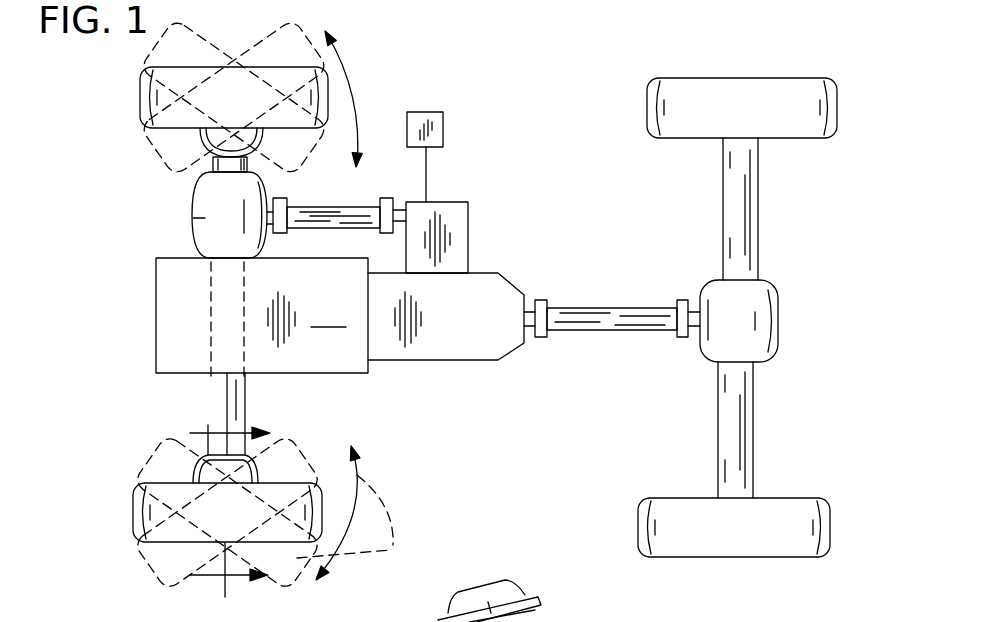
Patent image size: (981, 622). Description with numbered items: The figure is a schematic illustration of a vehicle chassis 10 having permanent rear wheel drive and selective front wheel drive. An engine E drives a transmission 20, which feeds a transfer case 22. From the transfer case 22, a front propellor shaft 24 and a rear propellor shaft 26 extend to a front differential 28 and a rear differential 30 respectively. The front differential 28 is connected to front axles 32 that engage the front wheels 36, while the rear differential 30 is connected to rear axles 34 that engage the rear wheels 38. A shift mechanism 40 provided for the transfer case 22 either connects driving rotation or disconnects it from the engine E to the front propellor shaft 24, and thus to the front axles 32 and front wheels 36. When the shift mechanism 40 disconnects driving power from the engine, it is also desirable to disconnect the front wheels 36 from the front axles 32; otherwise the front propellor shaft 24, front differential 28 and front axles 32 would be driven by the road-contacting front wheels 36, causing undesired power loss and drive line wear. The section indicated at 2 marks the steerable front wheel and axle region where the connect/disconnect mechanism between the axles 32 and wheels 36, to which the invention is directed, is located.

The engine 10 is at (157, 303).
The transmission 20 is at (478, 327).
The transfer case 22 is at (455, 243).
The front propellor shaft 24 is at (365, 212).
The rear propellor shaft 26 is at (600, 318).
The front differential 28 is at (207, 220).
The rear differential 30 is at (760, 325).
The front axle 32 is at (210, 163).
The rear axle 34 is at (745, 226).
The front wheel 36 is at (131, 91).
The rear wheel 38 is at (636, 94).
The shift mechanism 40 is at (443, 132).
The section line 2- 2 is at (230, 509).